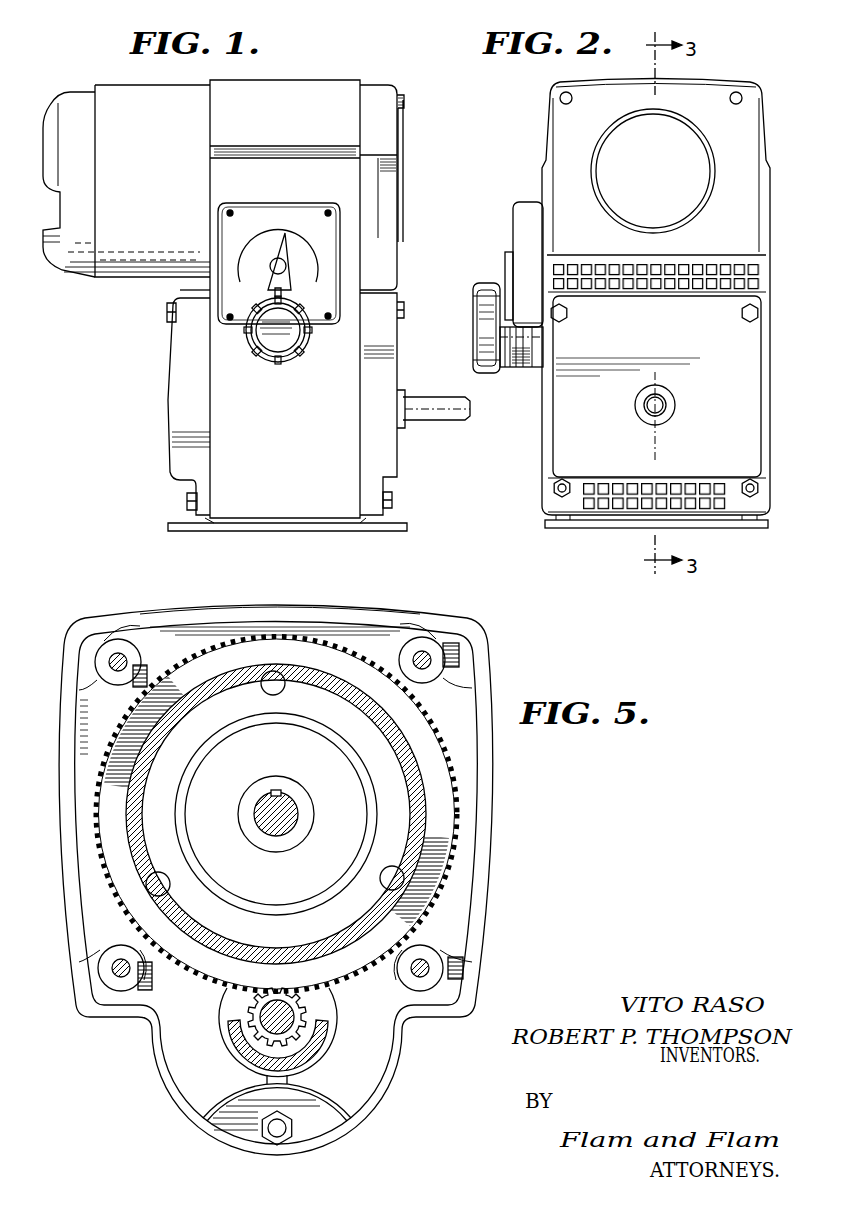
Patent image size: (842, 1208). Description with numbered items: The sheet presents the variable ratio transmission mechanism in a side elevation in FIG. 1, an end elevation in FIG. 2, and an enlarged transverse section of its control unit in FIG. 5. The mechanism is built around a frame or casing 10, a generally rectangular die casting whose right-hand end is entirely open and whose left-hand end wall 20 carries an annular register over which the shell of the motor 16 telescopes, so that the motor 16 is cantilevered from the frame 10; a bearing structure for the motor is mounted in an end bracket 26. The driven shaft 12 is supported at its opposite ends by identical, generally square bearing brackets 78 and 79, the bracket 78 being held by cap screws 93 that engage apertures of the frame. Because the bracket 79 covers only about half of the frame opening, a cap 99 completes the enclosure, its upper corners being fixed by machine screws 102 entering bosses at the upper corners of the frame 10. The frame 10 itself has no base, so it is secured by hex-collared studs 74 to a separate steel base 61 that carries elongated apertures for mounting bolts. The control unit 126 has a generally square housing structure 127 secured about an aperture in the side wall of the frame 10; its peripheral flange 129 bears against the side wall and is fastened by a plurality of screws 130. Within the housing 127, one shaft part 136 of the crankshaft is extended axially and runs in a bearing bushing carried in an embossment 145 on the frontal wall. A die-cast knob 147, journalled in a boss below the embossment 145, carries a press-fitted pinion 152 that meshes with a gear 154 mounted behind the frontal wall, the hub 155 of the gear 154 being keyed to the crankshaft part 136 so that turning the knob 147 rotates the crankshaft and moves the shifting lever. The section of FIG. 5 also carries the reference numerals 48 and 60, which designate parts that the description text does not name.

In FIG. 1, the frame 10 is at (285, 299).
In FIG. 1, the driven shaft 12 is at (430, 400).
In FIG. 2, the driven shaft 12 is at (675, 404).
In FIG. 1, the motor 16 is at (133, 256).
In FIG. 1, the left-hand end wall 20 is at (180, 290).
In FIG. 1, the end bracket 26 is at (71, 112).
In FIG. 5, the pinion bearing boss 48 is at (232, 1050).
In FIG. 5, the mounting nut 60 is at (286, 1138).
In FIG. 1, the base 61 is at (280, 532).
In FIG. 1, the hex-collared studs 74 is at (187, 503).
In FIG. 2, the hex-collared studs 74 is at (562, 500).
In FIG. 1, the bearing bracket 78 is at (178, 462).
In FIG. 1, the bearing bracket 79 is at (392, 346).
In FIG. 2, the bearing bracket 79 is at (560, 451).
In FIG. 1, the cap screws 93 is at (170, 314).
In FIG. 2, the cap screws 93 is at (567, 313).
In FIG. 1, the cap 99 is at (392, 253).
In FIG. 2, the cap 99 is at (700, 90).
In FIG. 1, the machine screws 102 is at (405, 101).
In FIG. 2, the machine screws 102 is at (559, 99).
In FIG. 1, the control unit 126 is at (285, 202).
In FIG. 5, the control unit 126 is at (88, 606).
In FIG. 5, the housing structure 127 is at (490, 825).
In FIG. 5, the peripheral flange 129 is at (265, 600).
In FIG. 1, the screws 130 is at (332, 214).
In FIG. 5, the screws 130 is at (430, 661).
In FIG. 5, the crankshaft part 136 is at (289, 832).
In FIG. 1, the embossment 145 is at (288, 278).
In FIG. 2, the embossment 145 is at (514, 368).
In FIG. 1, the knob 147 is at (285, 344).
In FIG. 2, the knob 147 is at (482, 315).
In FIG. 5, the pinion 152 is at (300, 1012).
In FIG. 5, the gear 154 is at (423, 903).
In FIG. 5, the hub 155 is at (238, 812).